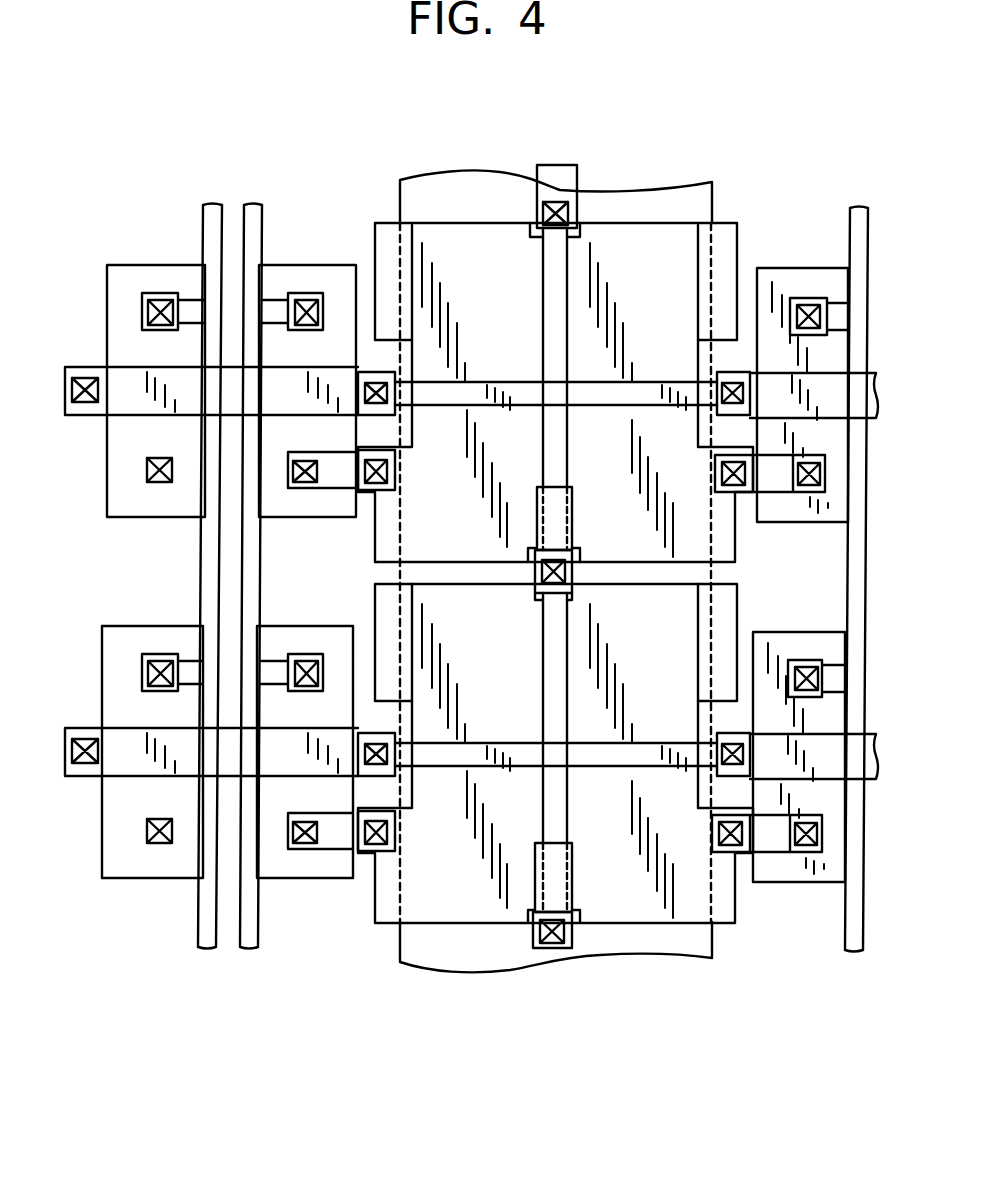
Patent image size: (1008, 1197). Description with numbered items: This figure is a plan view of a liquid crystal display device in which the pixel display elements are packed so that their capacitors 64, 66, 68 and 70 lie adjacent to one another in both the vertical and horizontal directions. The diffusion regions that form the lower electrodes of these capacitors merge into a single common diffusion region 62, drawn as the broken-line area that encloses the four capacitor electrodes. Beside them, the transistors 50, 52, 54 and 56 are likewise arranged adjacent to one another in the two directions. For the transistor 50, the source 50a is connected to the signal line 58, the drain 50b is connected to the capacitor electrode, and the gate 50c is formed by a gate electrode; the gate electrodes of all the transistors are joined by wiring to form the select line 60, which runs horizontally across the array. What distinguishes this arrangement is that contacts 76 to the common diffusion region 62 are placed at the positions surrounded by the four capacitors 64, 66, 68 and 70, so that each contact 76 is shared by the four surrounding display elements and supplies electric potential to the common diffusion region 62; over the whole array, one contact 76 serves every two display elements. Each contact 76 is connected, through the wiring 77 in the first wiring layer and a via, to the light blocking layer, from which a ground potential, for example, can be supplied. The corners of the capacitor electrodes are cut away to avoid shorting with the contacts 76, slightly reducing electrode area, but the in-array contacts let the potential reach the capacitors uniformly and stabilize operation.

The transistor 50 is at (307, 356).
The source 50a is at (340, 308).
The drain 50b is at (278, 477).
The gate 50c is at (288, 390).
The transistor 52 is at (139, 255).
The transistor 54 is at (297, 892).
The transistor 56 is at (147, 612).
The signal line 58 is at (205, 947).
The select line 60 is at (82, 355).
The common diffusion region 62 is at (438, 213).
The capacitor 64 is at (477, 244).
The capacitor 66 is at (662, 245).
The capacitor 68 is at (468, 908).
The capacitor 70 is at (632, 908).
The contact 76 is at (557, 203).
The wiring 77 is at (558, 200).